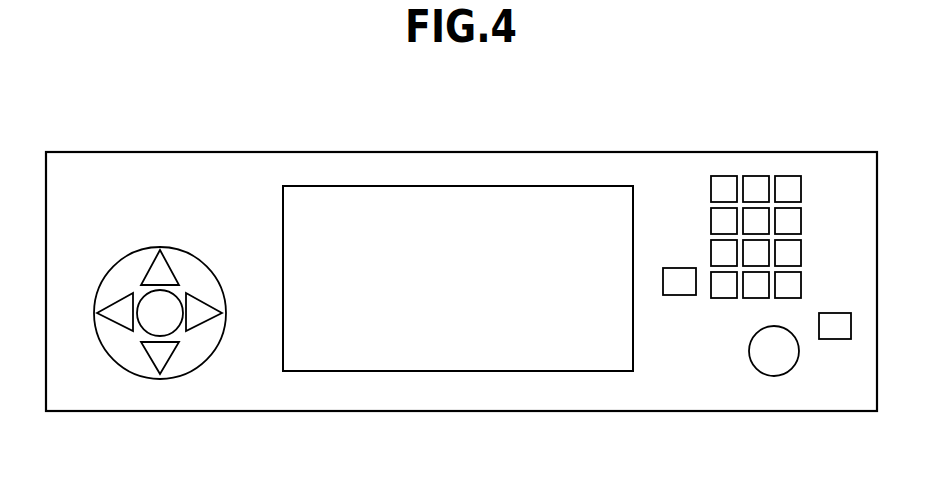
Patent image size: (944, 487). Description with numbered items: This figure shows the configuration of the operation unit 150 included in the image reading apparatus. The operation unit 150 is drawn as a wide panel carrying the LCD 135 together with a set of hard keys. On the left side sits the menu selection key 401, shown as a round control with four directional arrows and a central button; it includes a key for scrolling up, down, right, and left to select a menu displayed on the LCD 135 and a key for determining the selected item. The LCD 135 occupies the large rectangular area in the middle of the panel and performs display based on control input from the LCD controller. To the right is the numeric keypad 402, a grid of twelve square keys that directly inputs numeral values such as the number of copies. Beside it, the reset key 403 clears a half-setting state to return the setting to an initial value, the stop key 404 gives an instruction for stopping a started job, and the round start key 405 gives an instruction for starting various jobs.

The operation unit 150 is at (476, 150).
The LCD 135 is at (555, 185).
The menu selection key 401 is at (160, 247).
The numeric keypad 402 is at (725, 175).
The reset key 403 is at (680, 296).
The stop key 404 is at (836, 312).
The start key 405 is at (774, 377).